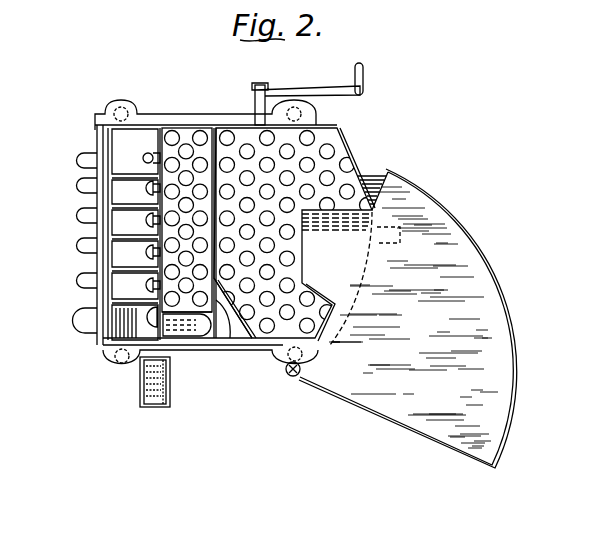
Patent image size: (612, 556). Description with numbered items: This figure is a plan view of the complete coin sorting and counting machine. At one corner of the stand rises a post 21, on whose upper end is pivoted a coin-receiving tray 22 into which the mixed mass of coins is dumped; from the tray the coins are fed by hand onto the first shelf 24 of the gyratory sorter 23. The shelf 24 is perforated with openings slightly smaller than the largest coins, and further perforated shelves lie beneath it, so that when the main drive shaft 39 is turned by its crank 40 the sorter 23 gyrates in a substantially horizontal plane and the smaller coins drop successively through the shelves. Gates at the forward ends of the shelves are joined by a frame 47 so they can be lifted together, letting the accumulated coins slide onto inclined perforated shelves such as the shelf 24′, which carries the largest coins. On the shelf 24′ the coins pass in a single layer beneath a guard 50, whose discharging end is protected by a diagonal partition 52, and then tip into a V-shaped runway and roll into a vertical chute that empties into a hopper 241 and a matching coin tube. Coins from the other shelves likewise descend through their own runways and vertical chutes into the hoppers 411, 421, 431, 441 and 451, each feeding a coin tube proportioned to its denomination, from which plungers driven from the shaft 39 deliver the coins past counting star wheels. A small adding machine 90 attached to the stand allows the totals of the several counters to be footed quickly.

The post 21 is at (295, 377).
The coin-receiving tray 22 is at (500, 307).
The gyratory sorter 23 is at (362, 168).
The first shelf 24 is at (332, 140).
The shelf 24′ is at (185, 137).
The main drive shaft 39 is at (257, 104).
The crank 40 is at (363, 72).
The hopper 411 is at (117, 298).
The hopper 421 is at (110, 258).
The hopper 431 is at (110, 224).
The hopper 441 is at (110, 194).
The hopper 451 is at (115, 157).
The hopper 241 is at (117, 322).
The frame 47 is at (216, 300).
The guard 50 is at (190, 327).
The partition 52 is at (236, 292).
The adding machine 90 is at (161, 407).